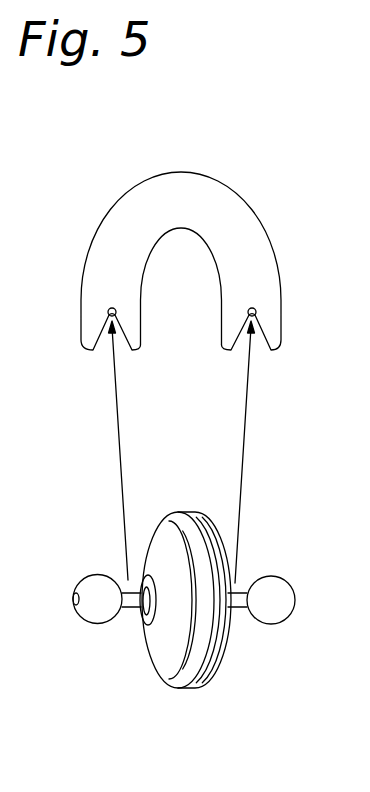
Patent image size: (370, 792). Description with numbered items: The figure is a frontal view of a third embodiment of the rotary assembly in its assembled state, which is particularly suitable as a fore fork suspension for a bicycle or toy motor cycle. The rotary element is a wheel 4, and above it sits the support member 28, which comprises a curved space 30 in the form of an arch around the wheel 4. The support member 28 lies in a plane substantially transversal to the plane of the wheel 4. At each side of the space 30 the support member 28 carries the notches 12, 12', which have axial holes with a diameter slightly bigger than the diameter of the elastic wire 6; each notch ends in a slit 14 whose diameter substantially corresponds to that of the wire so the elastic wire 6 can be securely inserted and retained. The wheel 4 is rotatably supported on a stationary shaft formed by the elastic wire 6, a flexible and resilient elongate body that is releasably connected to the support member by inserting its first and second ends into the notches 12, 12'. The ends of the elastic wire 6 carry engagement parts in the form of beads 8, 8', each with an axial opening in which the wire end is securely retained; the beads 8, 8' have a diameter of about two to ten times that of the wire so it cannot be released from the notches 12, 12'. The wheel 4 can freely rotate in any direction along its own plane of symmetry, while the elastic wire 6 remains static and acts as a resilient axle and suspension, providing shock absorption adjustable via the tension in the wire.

The wheel 4 is at (162, 653).
The elastic wire 6 is at (130, 607).
The bead 8 is at (88, 589).
The bead 8' is at (290, 595).
The notch 12 is at (99, 450).
The notch 12' is at (270, 452).
The slit 14 is at (107, 309).
The support member 28 is at (243, 217).
The curved space 30 is at (127, 288).